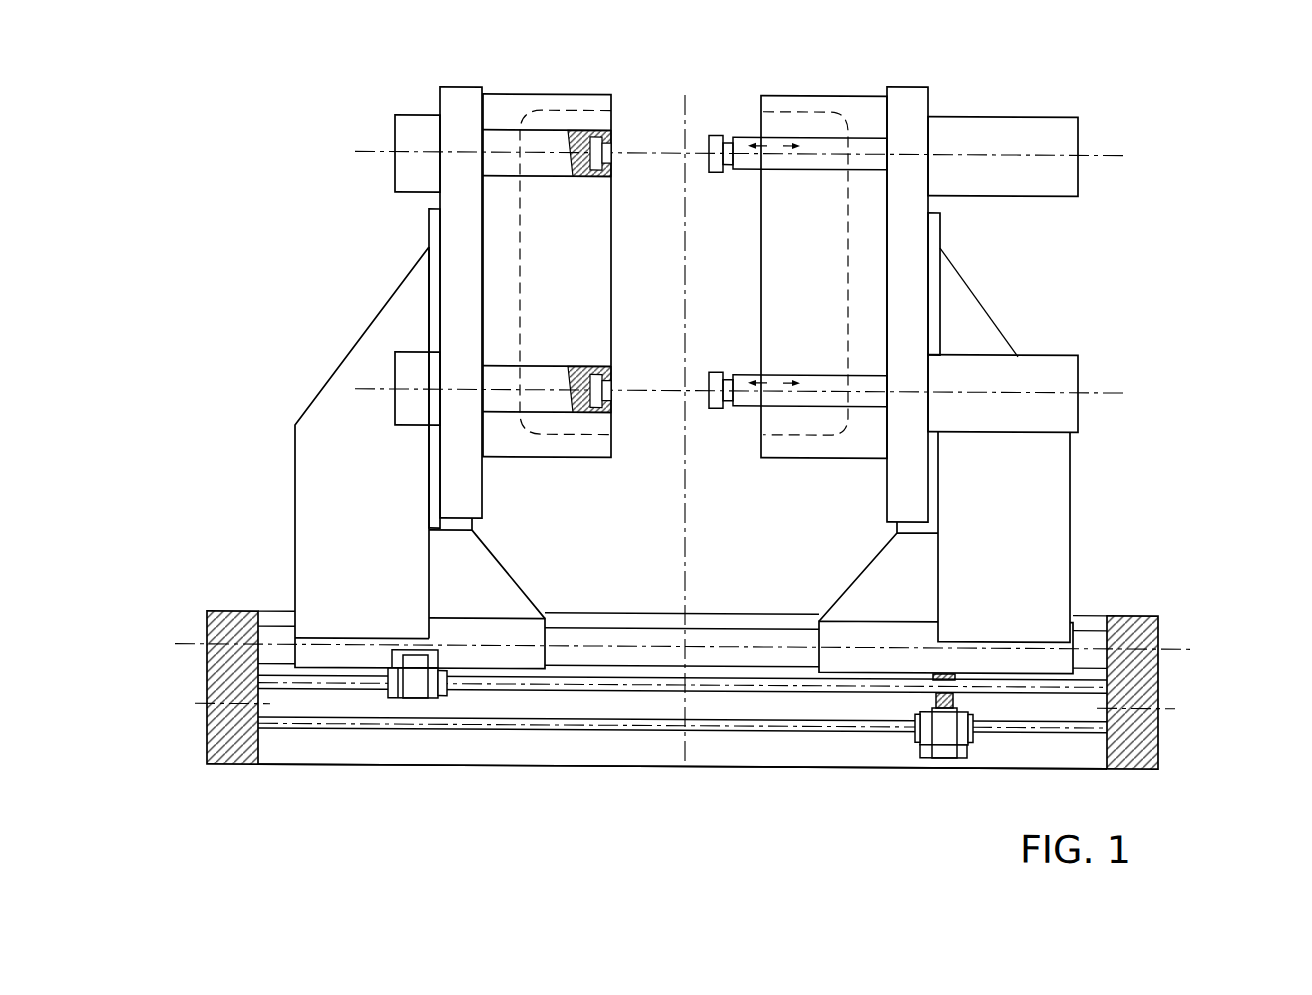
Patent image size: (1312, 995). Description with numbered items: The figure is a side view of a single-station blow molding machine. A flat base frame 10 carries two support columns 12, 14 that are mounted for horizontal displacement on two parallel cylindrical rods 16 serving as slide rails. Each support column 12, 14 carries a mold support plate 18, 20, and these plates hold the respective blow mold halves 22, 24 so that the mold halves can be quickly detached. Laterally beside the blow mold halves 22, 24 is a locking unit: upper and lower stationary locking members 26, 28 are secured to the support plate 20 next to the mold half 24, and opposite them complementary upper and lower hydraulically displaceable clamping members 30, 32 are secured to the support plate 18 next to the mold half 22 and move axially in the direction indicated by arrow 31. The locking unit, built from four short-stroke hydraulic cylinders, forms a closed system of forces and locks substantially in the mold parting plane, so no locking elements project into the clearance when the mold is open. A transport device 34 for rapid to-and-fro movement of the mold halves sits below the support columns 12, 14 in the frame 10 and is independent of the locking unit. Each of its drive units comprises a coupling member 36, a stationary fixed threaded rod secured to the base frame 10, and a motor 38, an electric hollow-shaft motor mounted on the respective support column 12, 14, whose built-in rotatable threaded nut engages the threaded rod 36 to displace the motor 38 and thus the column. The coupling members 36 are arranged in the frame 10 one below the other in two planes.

The base frame 10 is at (1128, 669).
The support column 12 is at (885, 587).
The support column 14 is at (462, 587).
The cylindrical rods 16 is at (733, 642).
The mold support plate 18 is at (903, 334).
The mold support plate 20 is at (457, 340).
The blow mold half 22 is at (879, 264).
The blow mold half 24 is at (438, 271).
The upper stationary locking member 26 is at (495, 149).
The lower stationary locking member 28 is at (545, 401).
The upper hydraulically displaceable clamping member 30 is at (867, 150).
The arrow 31 is at (773, 142).
The lower hydraulically displaceable clamping member 32 is at (855, 400).
The transport device 34 is at (530, 797).
The coupling member 36 is at (618, 681).
The motor 38 is at (418, 690).